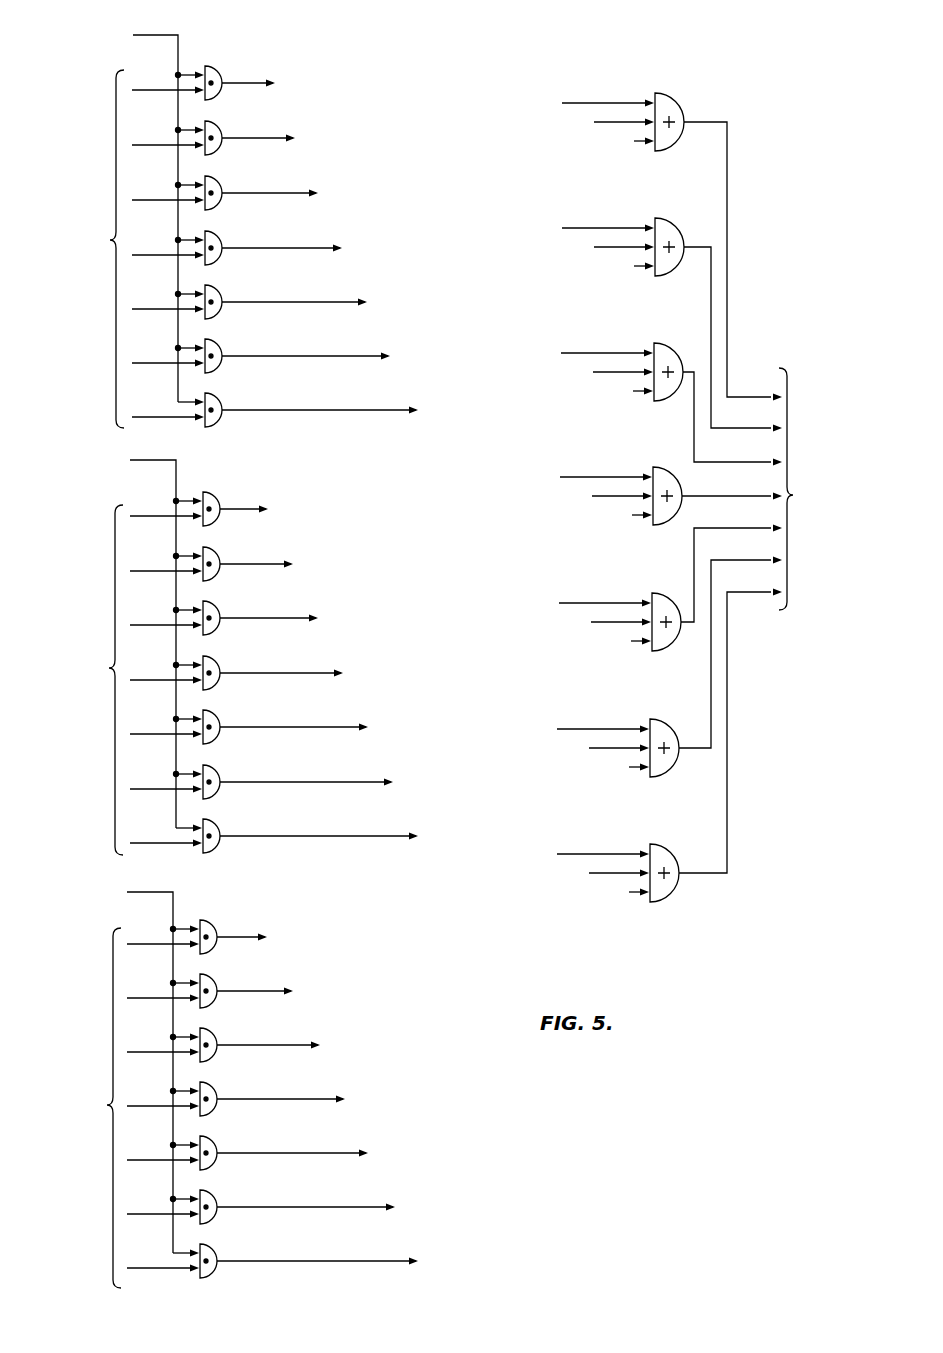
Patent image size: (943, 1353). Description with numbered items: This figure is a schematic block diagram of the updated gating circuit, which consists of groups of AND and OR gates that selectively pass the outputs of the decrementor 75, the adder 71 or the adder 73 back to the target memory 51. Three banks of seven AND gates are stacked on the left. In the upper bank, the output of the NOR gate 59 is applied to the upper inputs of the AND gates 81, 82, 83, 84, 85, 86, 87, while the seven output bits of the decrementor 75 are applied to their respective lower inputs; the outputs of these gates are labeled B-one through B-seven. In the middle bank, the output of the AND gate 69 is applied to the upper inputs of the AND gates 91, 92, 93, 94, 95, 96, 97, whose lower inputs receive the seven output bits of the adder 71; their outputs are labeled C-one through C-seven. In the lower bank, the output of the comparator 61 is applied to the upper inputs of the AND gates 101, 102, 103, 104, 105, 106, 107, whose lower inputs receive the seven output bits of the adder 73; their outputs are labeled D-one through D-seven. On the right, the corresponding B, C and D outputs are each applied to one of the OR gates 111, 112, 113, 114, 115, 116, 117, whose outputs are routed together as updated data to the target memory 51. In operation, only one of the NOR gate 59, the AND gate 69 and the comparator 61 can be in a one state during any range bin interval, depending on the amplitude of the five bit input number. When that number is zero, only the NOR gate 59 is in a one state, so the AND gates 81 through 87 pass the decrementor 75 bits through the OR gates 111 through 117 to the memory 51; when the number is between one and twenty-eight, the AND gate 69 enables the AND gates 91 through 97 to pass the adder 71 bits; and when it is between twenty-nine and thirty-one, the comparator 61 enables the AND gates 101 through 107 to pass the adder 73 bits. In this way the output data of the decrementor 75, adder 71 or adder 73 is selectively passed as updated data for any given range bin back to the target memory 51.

The target memory 51 is at (829, 489).
The NOR gate 59 is at (105, 206).
The comparator 61 is at (94, 1063).
The AND gate 69 is at (102, 633).
The adder 71 is at (70, 680).
The adder 73 is at (68, 1108).
The decrementor 75 is at (75, 249).
The AND gate 81 is at (214, 67).
The AND gate 82 is at (214, 122).
The AND gate 83 is at (214, 177).
The AND gate 84 is at (214, 232).
The AND gate 85 is at (214, 286).
The AND gate 86 is at (214, 340).
The AND gate 87 is at (214, 394).
The AND gate 91 is at (212, 493).
The AND gate 92 is at (212, 548).
The AND gate 93 is at (212, 602).
The AND gate 94 is at (212, 657).
The AND gate 95 is at (212, 711).
The AND gate 96 is at (212, 766).
The AND gate 97 is at (212, 820).
The AND gate 101 is at (213, 920).
The AND gate 102 is at (213, 974).
The AND gate 103 is at (213, 1028).
The AND gate 104 is at (213, 1082).
The AND gate 105 is at (213, 1136).
The AND gate 106 is at (213, 1190).
The AND gate 107 is at (213, 1244).
The OR gate 111 is at (676, 96).
The OR gate 112 is at (678, 223).
The OR gate 113 is at (677, 348).
The OR gate 114 is at (672, 470).
The OR gate 115 is at (670, 596).
The OR gate 116 is at (672, 723).
The OR gate 117 is at (671, 851).